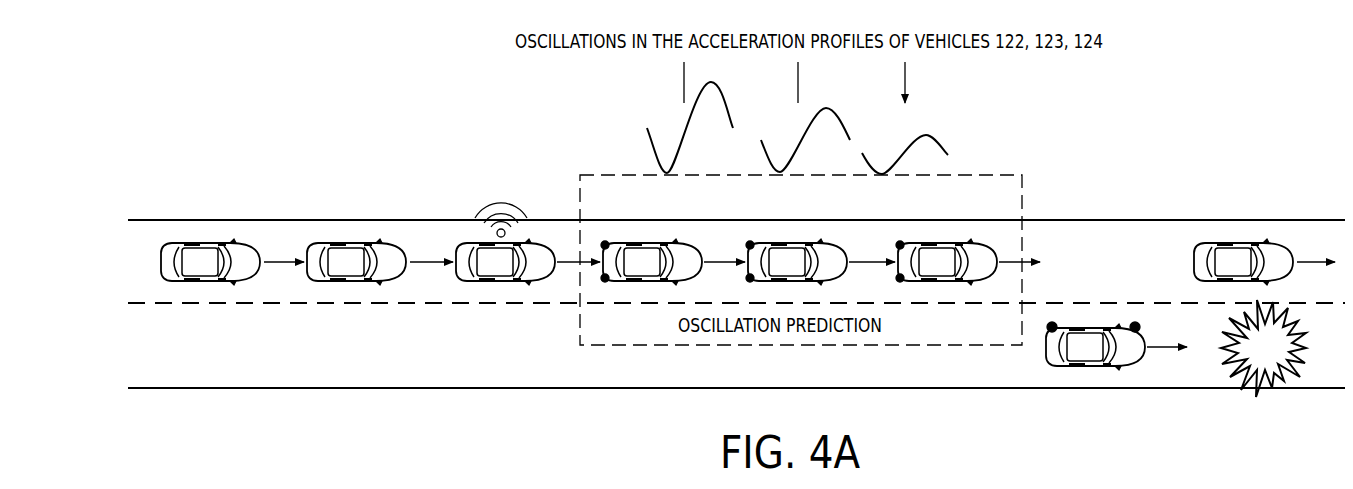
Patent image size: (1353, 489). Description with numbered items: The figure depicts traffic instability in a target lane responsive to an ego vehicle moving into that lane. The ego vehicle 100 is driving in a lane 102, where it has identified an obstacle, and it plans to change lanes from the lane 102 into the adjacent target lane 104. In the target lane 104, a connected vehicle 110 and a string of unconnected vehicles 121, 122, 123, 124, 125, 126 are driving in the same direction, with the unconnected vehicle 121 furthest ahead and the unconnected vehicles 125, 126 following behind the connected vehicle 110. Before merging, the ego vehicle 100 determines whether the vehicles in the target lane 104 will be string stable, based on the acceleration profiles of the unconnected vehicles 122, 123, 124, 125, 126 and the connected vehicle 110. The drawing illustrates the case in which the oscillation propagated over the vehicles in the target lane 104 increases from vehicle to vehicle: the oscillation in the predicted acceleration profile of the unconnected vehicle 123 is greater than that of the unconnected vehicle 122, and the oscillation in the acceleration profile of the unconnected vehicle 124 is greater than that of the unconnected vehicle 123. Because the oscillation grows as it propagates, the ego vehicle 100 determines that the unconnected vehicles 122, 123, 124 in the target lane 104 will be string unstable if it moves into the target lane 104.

The unconnected vehicle 126 is at (248, 243).
The unconnected vehicle 125 is at (395, 243).
The connected vehicle 110 is at (540, 243).
The unconnected vehicle 124 is at (690, 243).
The unconnected vehicle 123 is at (835, 243).
The unconnected vehicle 122 is at (983, 243).
The unconnected vehicle 121 is at (1262, 243).
The target lane 104 is at (128, 291).
The lane 102 is at (128, 368).
The ego vehicle 100 is at (1043, 346).